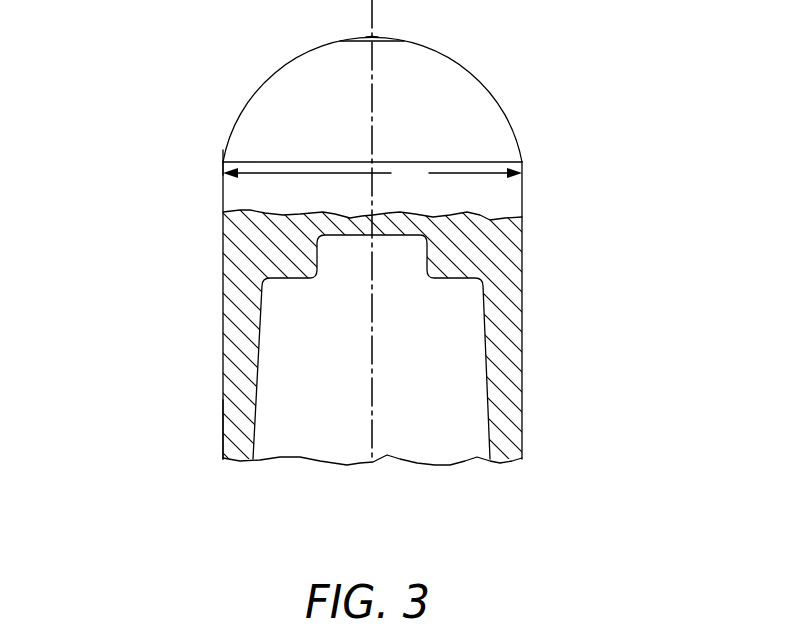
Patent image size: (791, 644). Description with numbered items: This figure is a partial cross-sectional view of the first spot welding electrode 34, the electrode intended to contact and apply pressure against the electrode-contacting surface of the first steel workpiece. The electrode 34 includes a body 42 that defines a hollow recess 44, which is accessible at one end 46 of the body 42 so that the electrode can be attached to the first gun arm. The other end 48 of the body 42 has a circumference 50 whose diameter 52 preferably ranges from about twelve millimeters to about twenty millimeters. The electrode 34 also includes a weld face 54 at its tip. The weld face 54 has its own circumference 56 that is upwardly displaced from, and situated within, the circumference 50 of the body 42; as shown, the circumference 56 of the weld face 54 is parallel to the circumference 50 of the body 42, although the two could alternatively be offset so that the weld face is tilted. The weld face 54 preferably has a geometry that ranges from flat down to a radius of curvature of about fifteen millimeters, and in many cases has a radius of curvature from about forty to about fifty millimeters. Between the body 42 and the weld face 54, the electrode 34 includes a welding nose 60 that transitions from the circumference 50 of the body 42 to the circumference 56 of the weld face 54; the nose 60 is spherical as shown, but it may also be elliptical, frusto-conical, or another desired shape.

The first spot welding electrode 34 is at (131, 134).
The body 42 is at (234, 253).
The hollow recess 44 is at (255, 420).
The one end 46 is at (207, 439).
The other end 48 is at (207, 153).
The circumference of the body 50 is at (467, 171).
The diameter of the body circumference 52 is at (424, 187).
The weld face 54 is at (380, 33).
The circumference of the weld face 56 is at (352, 43).
The welding nose 60 is at (463, 110).